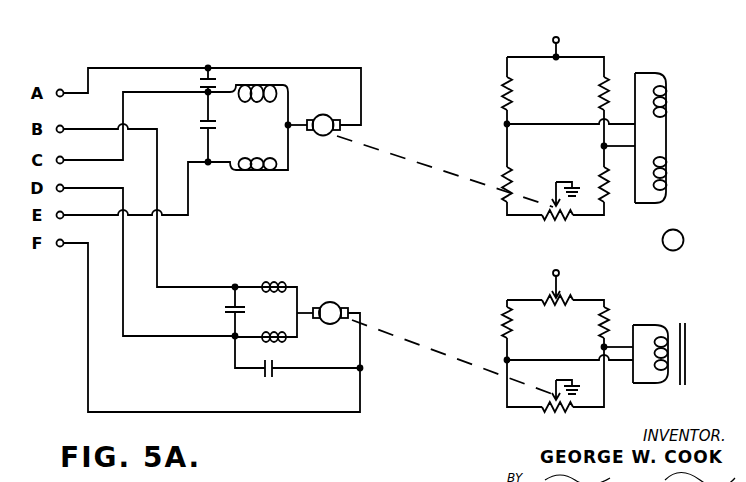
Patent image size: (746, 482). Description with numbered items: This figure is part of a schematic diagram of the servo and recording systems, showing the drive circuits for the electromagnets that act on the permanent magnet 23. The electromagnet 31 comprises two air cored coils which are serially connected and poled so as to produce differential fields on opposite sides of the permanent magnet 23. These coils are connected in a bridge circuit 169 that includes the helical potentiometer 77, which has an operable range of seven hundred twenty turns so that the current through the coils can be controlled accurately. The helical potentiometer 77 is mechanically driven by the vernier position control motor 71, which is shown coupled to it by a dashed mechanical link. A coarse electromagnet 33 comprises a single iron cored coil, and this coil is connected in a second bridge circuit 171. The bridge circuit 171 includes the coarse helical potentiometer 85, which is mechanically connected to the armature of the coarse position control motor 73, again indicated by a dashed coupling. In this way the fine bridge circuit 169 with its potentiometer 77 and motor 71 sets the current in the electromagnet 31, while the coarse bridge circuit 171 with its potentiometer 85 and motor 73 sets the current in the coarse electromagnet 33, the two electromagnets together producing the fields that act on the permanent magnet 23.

The vernier position control motor 71 is at (315, 117).
The coarse position control motor 73 is at (339, 304).
The bridge circuit 169 is at (568, 134).
The bridge circuit 171 is at (567, 345).
The helical potentiometer 77 is at (561, 220).
The coarse helical potentiometer 85 is at (566, 414).
The electromagnet 31 is at (666, 138).
The coarse electromagnet 33 is at (690, 356).
The permanent magnet 23 is at (682, 246).